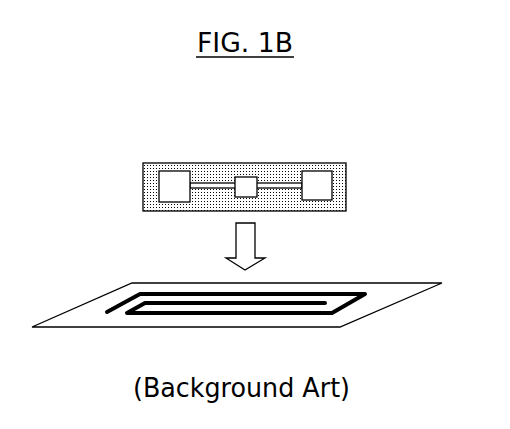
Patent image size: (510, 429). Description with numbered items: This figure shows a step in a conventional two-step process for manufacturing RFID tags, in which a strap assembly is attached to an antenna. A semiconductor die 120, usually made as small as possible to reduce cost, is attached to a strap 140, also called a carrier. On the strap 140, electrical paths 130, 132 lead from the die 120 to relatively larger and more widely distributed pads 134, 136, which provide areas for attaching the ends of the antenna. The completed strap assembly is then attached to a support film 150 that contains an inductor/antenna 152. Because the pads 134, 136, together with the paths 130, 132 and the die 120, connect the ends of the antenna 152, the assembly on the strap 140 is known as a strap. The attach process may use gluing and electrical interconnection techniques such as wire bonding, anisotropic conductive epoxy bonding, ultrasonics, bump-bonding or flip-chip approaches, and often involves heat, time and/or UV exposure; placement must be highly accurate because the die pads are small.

The die 120 is at (239, 172).
The electrical path 130 is at (285, 188).
The electrical path 132 is at (202, 192).
The pad 134 is at (171, 177).
The pad 136 is at (323, 176).
The strap 140 is at (369, 162).
The support film 150 is at (376, 314).
The antenna 152 is at (352, 293).